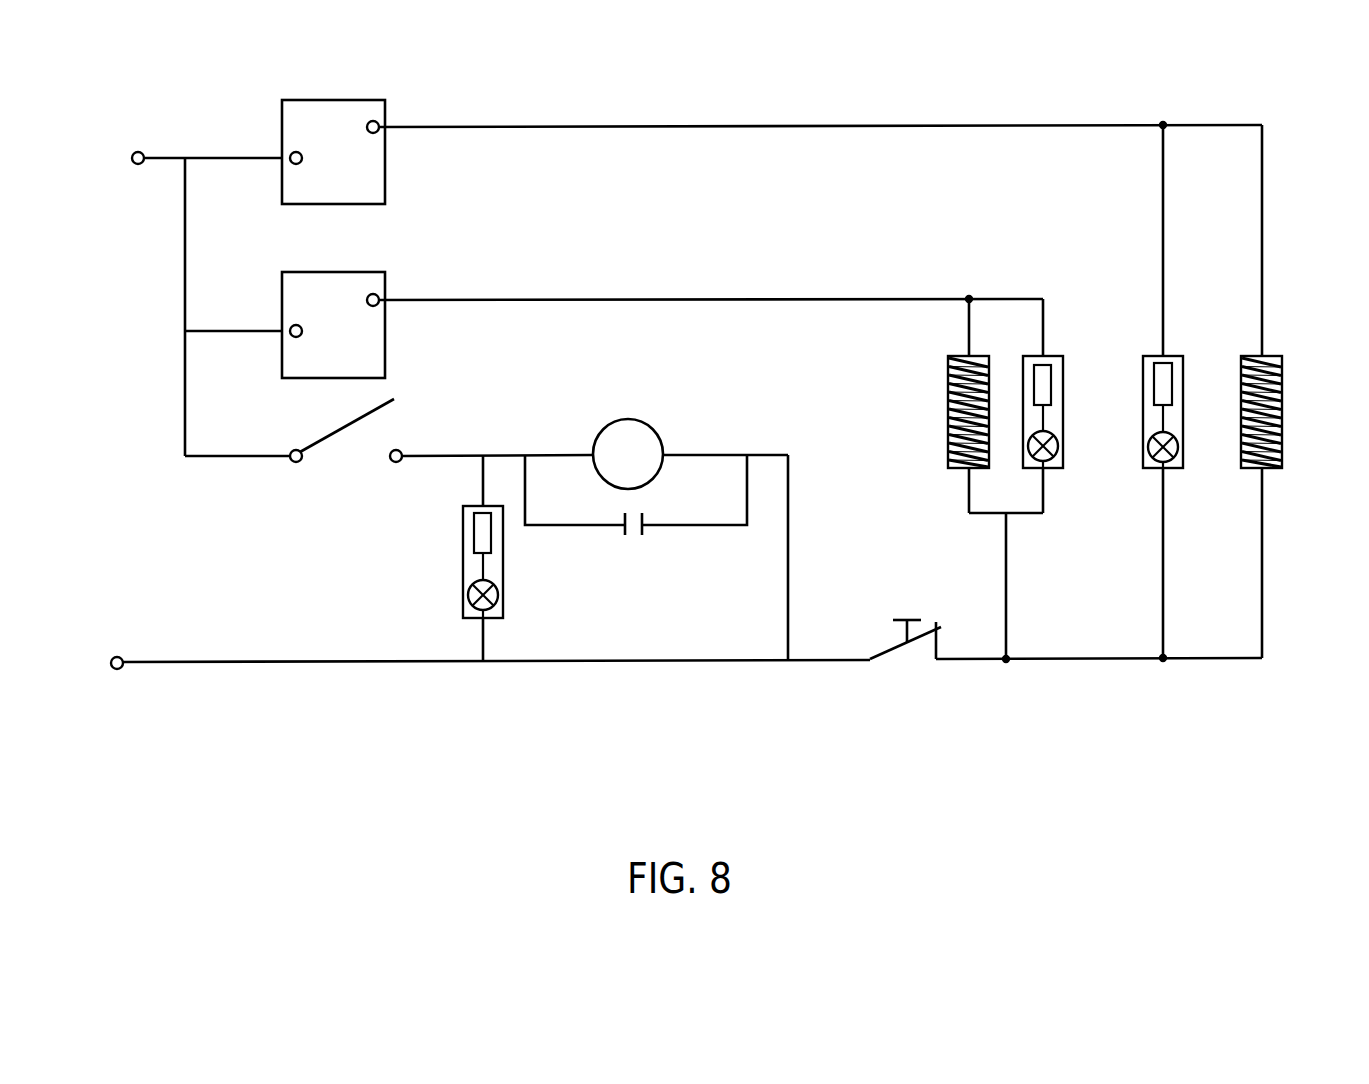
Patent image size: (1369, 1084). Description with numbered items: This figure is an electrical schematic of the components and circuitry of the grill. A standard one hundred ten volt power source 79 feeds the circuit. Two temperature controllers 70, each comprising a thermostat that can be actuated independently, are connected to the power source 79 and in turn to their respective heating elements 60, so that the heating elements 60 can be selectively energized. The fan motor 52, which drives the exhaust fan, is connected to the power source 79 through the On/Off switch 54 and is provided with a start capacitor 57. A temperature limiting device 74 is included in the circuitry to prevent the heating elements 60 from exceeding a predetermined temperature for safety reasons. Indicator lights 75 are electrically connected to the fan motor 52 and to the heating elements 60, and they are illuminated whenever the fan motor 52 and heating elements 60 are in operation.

The power source 79 is at (85, 404).
The temperature controller 70 is at (387, 180).
The On/Off switch 54 is at (323, 438).
The fan motor 52 is at (653, 427).
The start capacitor 57 is at (644, 529).
The indicator lights 75 is at (503, 570).
The temperature limiting device 74 is at (897, 620).
The heating element 60 is at (948, 441).